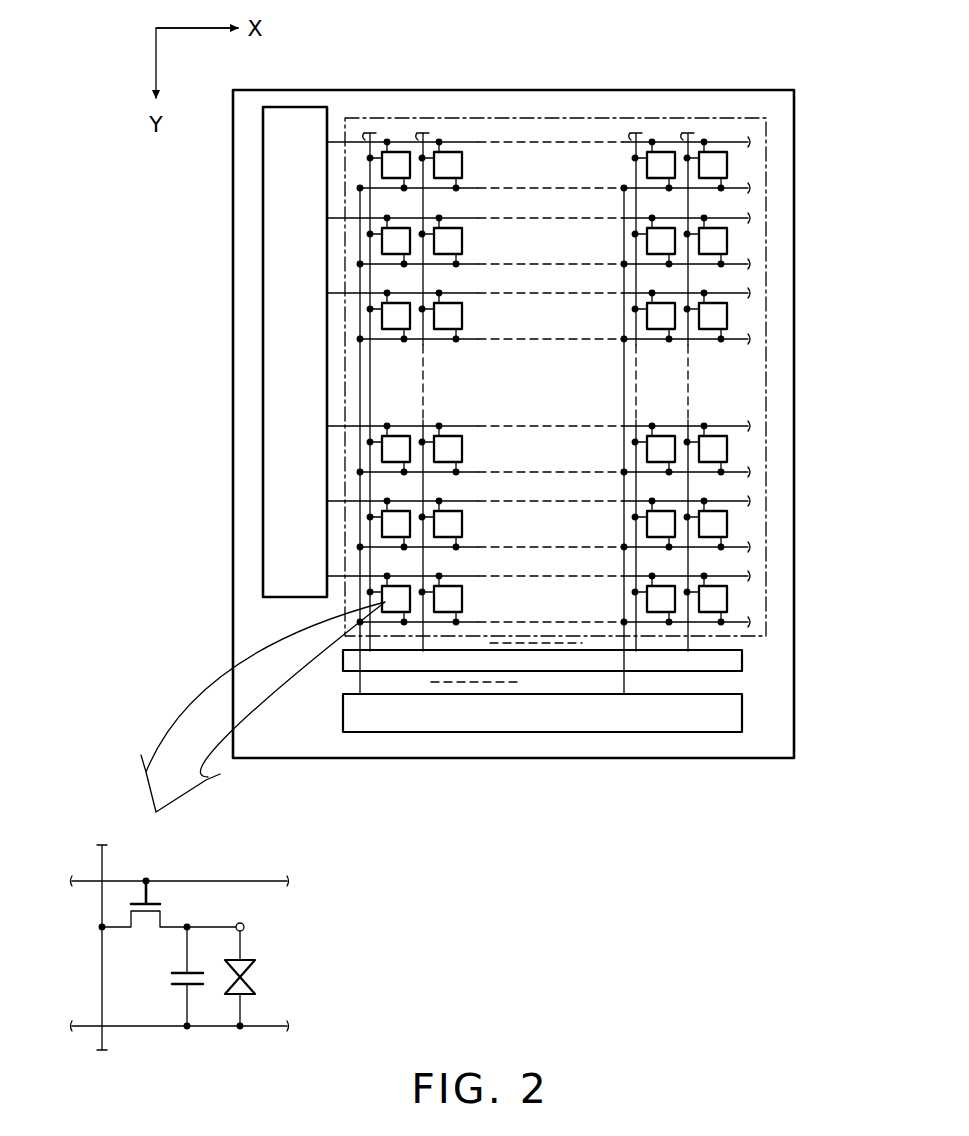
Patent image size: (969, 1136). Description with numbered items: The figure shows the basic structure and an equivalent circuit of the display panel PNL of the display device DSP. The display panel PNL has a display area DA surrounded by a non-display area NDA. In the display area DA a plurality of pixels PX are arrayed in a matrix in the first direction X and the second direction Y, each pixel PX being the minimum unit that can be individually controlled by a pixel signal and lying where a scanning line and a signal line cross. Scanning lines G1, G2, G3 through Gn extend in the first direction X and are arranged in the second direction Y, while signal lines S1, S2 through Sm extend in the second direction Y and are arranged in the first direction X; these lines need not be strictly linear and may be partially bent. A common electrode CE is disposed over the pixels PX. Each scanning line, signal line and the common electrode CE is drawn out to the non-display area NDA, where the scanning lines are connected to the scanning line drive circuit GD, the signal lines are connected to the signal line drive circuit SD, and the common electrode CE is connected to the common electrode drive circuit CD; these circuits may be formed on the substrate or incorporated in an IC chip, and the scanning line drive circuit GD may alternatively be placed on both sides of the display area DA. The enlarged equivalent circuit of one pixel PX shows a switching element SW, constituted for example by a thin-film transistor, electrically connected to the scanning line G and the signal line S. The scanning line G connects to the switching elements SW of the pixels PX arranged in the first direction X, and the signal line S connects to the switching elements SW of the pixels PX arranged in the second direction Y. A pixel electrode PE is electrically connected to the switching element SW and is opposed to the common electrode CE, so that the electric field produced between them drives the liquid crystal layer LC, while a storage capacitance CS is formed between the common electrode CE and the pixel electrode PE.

The display device DSP is at (782, 65).
The display panel PNL is at (771, 748).
The scanning line drive circuit GD is at (297, 107).
The signal line drive circuit SD is at (742, 657).
The common electrode drive circuit CD is at (742, 712).
The display area DA is at (539, 130).
The non-display area NDA is at (627, 110).
The signal line S1 is at (370, 134).
The signal line S2 is at (423, 134).
The signal line Sm is at (688, 134).
The scanning line G1 is at (748, 144).
The scanning line G2 is at (748, 220).
The scanning line G3 is at (748, 295).
The scanning line Gn is at (748, 578).
The common electrode CE is at (360, 365).
The pixel PX is at (462, 167).
The signal line S is at (100, 975).
The scanning line G is at (92, 880).
The switching element SW is at (175, 914).
The pixel electrode PE is at (245, 927).
The storage capacitance CS is at (163, 971).
The liquid crystal layer LC is at (270, 976).